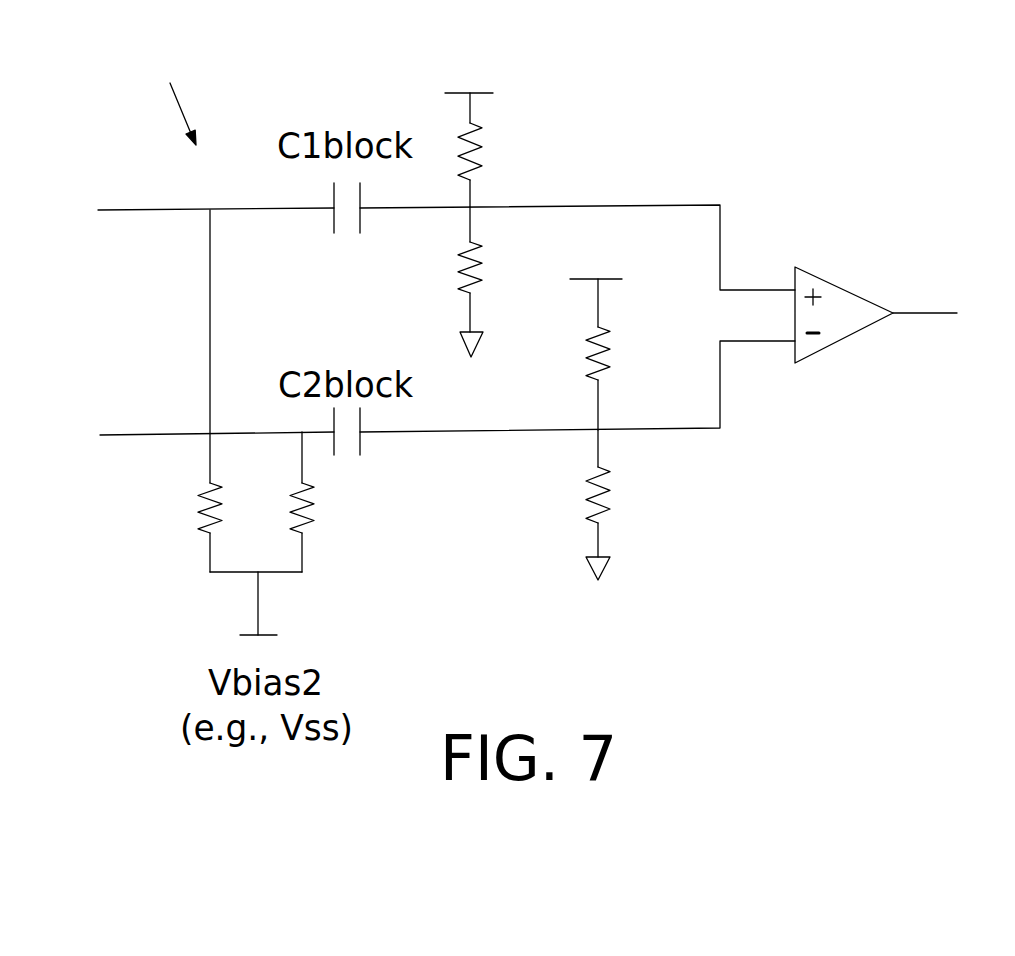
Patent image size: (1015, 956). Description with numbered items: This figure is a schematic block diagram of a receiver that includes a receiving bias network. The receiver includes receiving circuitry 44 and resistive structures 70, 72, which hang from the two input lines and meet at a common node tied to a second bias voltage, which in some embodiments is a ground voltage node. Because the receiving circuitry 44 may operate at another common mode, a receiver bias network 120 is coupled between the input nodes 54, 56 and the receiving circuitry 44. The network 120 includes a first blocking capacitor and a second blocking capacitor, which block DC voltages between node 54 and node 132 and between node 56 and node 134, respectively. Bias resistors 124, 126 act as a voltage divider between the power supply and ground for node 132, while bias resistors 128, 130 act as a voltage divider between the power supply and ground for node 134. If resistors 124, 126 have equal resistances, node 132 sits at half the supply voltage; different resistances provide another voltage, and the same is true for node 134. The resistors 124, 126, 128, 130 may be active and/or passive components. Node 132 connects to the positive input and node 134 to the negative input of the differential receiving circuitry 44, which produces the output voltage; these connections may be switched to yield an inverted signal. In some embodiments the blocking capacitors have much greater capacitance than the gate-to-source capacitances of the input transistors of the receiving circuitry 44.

The receiving circuitry 44 is at (835, 283).
The node 54 is at (149, 210).
The node 56 is at (152, 437).
The resistive structure 70 is at (210, 522).
The resistive structure 72 is at (303, 521).
The receiver bias network 120 is at (628, 95).
The bias resistor 124 is at (470, 169).
The bias resistor 126 is at (463, 268).
The bias resistor 128 is at (600, 366).
The bias resistor 130 is at (598, 481).
The node 132 is at (722, 228).
The node 134 is at (723, 403).